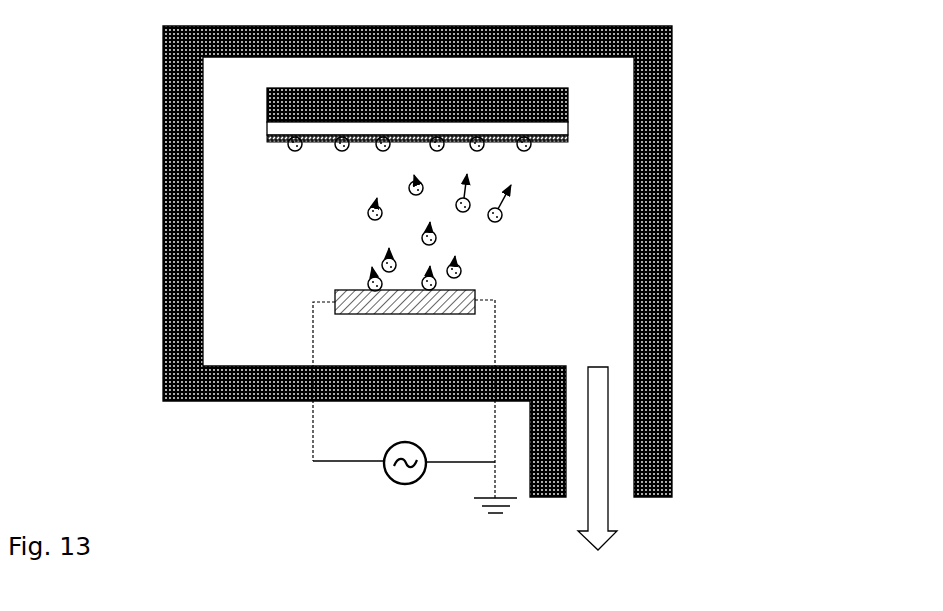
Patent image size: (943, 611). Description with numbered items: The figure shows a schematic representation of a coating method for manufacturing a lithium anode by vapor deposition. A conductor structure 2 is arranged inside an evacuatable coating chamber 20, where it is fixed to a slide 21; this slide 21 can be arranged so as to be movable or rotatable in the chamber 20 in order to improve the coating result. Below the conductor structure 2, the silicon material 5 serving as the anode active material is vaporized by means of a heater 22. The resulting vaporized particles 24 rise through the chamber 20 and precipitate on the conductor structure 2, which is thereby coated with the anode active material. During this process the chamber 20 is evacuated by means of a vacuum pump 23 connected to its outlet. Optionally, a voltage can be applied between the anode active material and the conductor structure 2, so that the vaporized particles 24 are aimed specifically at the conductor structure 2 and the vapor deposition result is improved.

The coating chamber 20 is at (150, 81).
The slide 21 is at (568, 103).
The conductor structure 2 is at (568, 137).
The vaporized particles 24 is at (461, 269).
The silicon material 5 is at (335, 297).
The heater 22 is at (385, 465).
The vacuum pump 23 is at (608, 460).